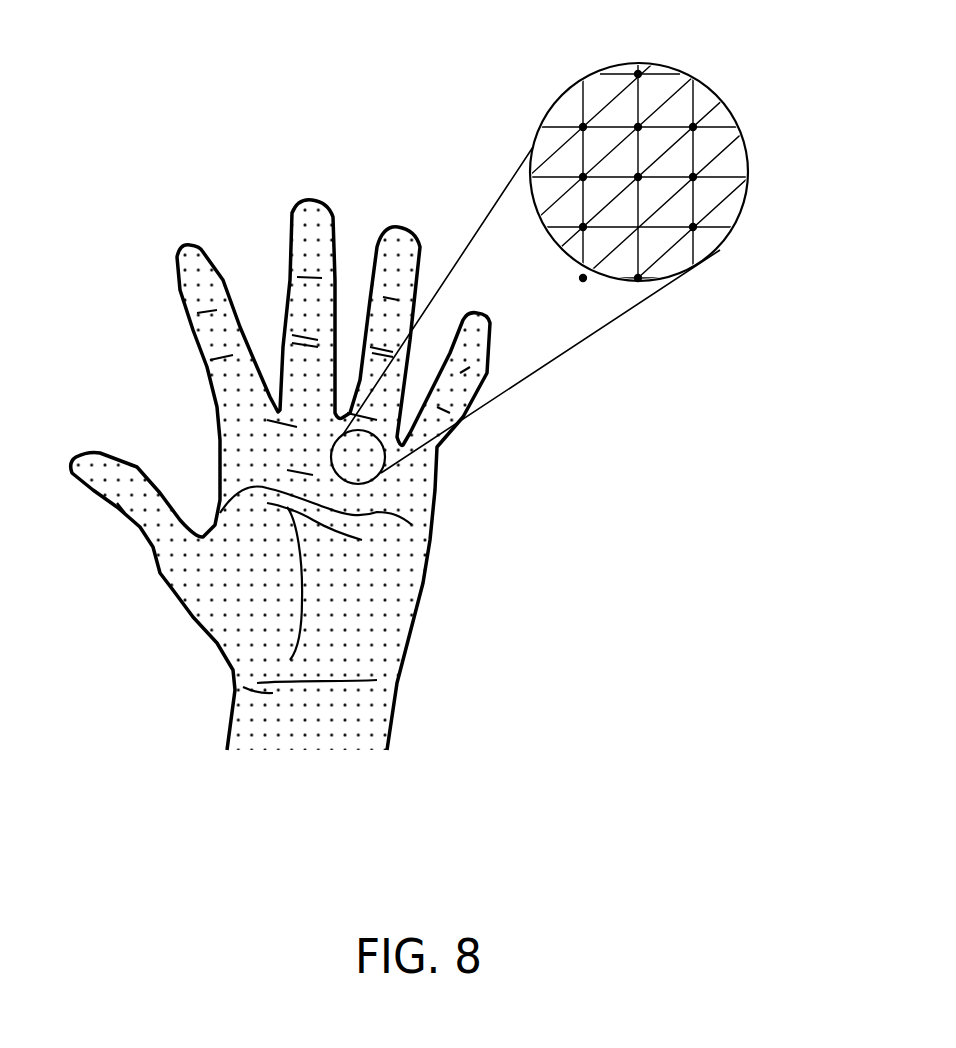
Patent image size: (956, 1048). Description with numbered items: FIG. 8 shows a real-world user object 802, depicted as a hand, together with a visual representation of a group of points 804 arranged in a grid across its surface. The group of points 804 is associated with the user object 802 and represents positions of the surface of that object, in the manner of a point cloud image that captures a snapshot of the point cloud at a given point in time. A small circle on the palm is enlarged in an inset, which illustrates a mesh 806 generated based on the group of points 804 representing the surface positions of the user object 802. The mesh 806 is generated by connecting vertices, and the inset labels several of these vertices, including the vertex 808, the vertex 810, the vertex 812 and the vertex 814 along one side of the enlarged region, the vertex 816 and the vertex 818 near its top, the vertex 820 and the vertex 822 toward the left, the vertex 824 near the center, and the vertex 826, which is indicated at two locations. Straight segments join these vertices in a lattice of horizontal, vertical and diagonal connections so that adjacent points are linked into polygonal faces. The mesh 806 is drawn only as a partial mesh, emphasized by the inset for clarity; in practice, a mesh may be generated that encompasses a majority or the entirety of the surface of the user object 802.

The user object 802 is at (423, 610).
The group of points 804 is at (288, 764).
The mesh 806 is at (626, 310).
The vertex 808 is at (640, 278).
The vertex 810 is at (695, 227).
The vertex 812 is at (695, 177).
The vertex 814 is at (695, 127).
The vertex 816 is at (640, 74).
The vertex 818 is at (636, 127).
The vertex 820 is at (580, 127).
The vertex 822 is at (583, 177).
The vertex 824 is at (637, 178).
The vertex 826 is at (583, 229).